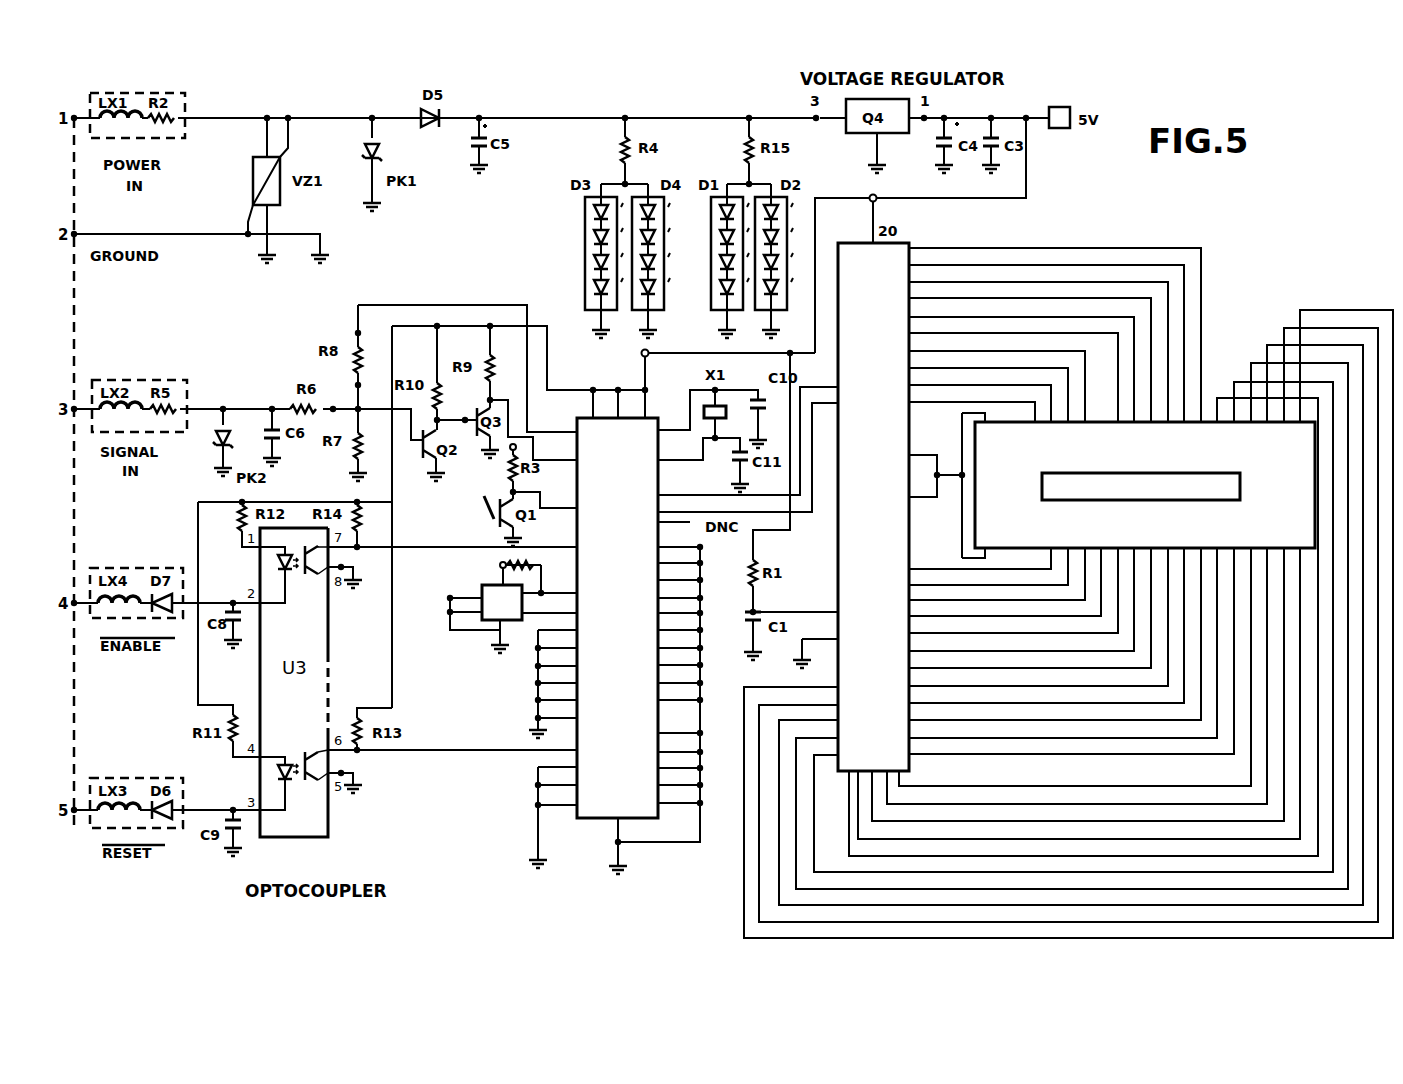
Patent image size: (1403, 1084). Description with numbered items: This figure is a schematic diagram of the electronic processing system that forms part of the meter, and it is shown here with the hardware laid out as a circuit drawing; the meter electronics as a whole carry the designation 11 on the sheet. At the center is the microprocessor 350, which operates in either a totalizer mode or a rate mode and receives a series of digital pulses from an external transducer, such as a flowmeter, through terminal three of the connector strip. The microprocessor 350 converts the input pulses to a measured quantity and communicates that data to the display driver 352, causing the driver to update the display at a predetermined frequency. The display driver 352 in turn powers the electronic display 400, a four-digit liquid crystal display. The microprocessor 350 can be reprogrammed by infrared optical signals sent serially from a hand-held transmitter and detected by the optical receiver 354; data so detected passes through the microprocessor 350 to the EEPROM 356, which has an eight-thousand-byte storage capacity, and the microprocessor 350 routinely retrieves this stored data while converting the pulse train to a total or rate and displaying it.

The display circuit 11 is at (1088, 201).
The microprocessor 350 is at (597, 648).
The display driver 352 is at (1068, 585).
The optical receiver 354 is at (479, 505).
The EEPROM 356 is at (450, 605).
The electronic display 400 is at (975, 506).